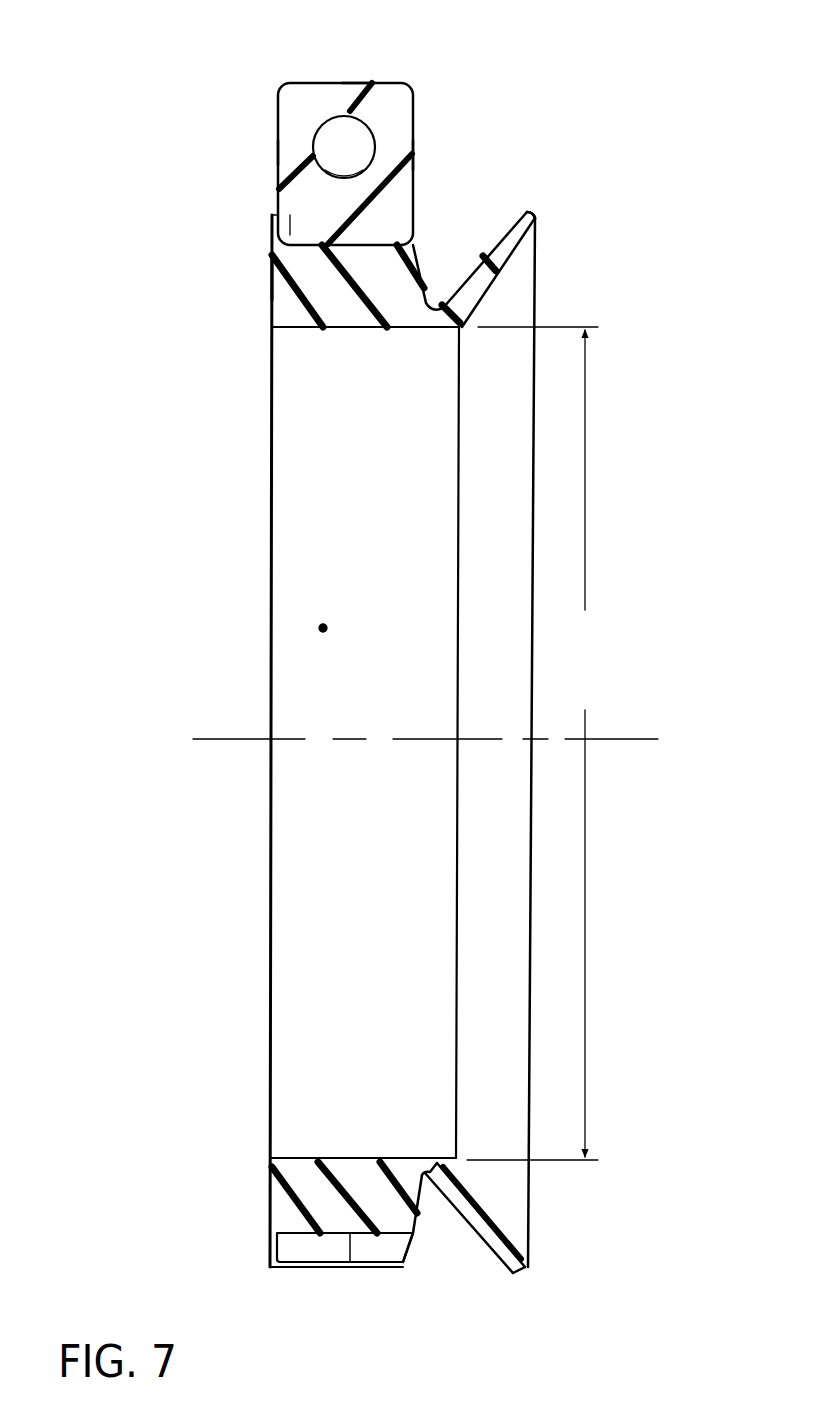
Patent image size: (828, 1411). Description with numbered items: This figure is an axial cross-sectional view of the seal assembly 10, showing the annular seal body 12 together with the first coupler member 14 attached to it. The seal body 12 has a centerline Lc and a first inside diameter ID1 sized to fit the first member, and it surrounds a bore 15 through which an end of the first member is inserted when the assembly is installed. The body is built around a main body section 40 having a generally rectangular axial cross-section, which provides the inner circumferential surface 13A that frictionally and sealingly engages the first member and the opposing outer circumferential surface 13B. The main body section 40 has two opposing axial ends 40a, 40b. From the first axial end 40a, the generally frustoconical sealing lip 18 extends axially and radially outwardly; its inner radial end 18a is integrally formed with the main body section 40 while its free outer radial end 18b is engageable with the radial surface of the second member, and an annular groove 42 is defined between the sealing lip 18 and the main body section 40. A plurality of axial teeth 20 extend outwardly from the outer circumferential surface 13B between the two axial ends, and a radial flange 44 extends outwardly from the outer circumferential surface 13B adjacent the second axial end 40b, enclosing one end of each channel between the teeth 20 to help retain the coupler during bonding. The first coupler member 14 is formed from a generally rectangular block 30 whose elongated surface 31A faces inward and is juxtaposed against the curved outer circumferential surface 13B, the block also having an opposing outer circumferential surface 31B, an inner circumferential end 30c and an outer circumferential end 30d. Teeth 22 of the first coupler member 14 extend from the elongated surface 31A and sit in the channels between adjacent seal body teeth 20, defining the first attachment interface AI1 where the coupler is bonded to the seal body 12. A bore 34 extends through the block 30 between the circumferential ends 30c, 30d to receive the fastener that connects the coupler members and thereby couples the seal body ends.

The seal assembly 10 is at (290, 741).
The seal body 12 is at (253, 447).
The first coupler member 14 is at (313, 125).
The bore 15 is at (323, 628).
The sealing lip 18 is at (519, 281).
The inner radial end 18a is at (445, 328).
The outer radial end 18b is at (528, 211).
The axial teeth 20 is at (398, 1263).
The teeth 22 is at (300, 222).
The block 30 is at (298, 80).
The inner circumferential end 30c is at (415, 157).
The outer circumferential end 30d is at (278, 151).
The elongated surface 31A is at (314, 248).
The outer circumferential surface 31B is at (342, 83).
The bore 34 is at (363, 137).
The main body section 40 is at (330, 288).
The first axial end 40a is at (425, 265).
The second axial end 40b is at (270, 277).
The annular groove 42 is at (450, 1245).
The radial flange 44 is at (275, 1247).
The inner circumferential surface 13A is at (348, 1158).
The outer circumferential surface 13B is at (347, 1262).
The first attachment interface AI1 is at (360, 253).
The first inside diameter ID1 is at (532, 743).
The centerline Lc is at (632, 739).